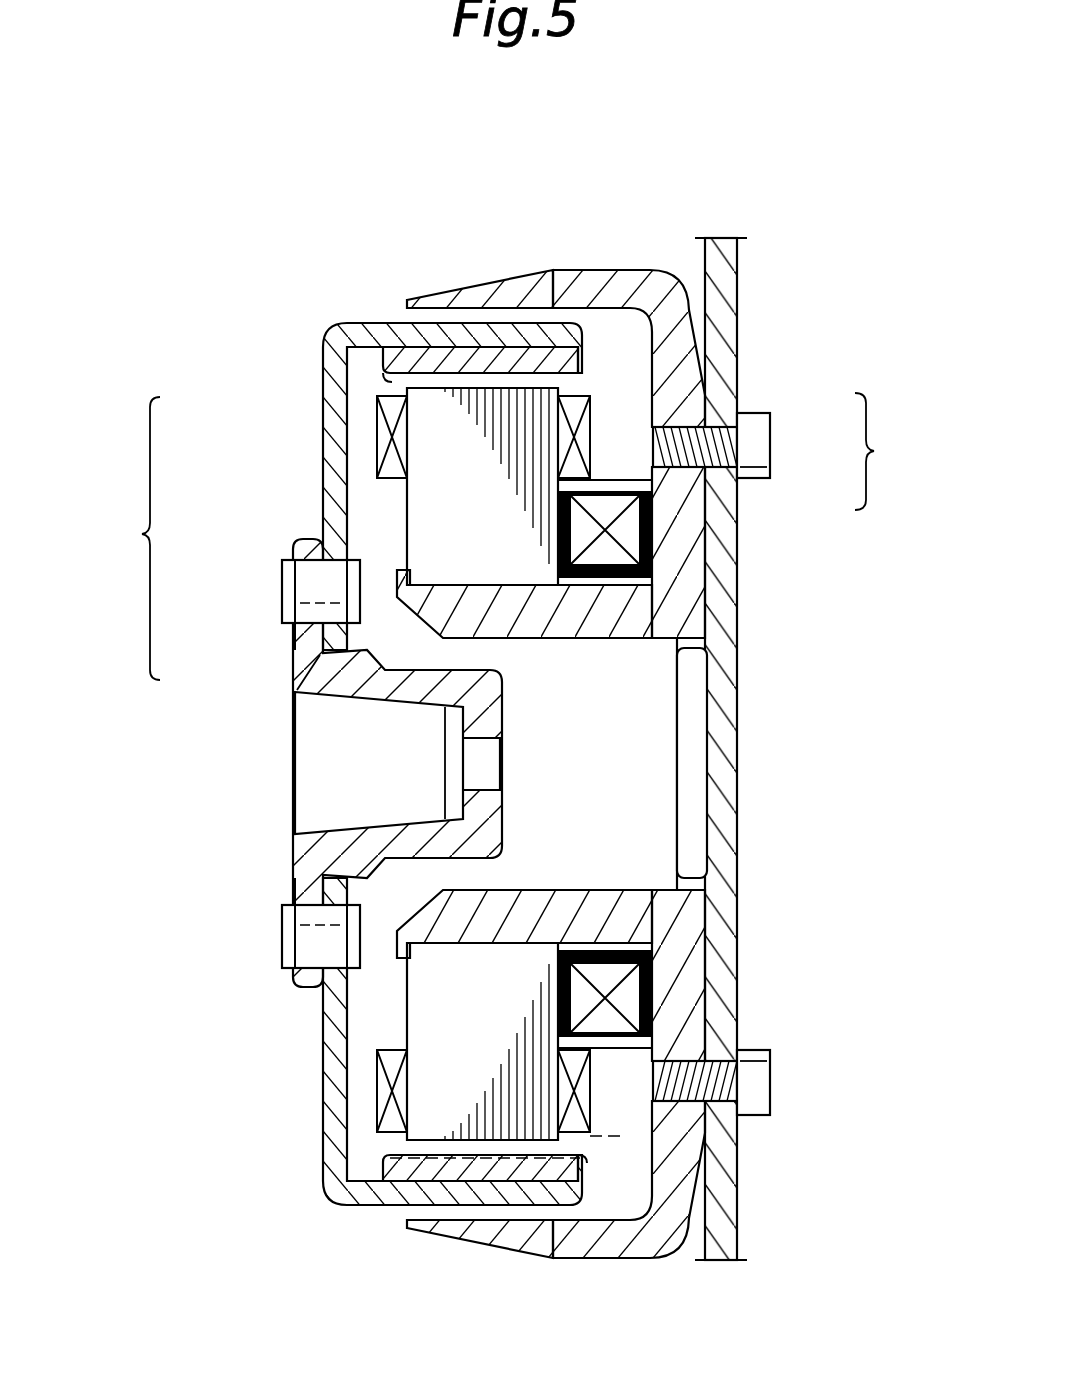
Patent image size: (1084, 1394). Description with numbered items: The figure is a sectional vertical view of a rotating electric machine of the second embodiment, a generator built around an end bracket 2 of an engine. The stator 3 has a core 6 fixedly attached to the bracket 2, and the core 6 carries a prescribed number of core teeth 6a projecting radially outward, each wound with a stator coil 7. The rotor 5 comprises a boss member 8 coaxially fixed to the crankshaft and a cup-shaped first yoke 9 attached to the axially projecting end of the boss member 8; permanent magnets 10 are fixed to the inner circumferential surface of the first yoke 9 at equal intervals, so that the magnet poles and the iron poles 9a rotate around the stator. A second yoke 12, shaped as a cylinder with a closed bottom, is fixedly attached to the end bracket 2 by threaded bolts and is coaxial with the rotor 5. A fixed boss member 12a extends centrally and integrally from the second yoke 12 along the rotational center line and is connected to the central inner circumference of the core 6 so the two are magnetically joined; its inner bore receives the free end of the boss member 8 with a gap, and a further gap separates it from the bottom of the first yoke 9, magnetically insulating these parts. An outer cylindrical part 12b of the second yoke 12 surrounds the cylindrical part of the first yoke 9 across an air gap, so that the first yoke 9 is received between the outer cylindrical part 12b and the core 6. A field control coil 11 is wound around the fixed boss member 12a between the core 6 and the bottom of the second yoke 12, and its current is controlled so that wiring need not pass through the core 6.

The end bracket 2 is at (725, 743).
The stator 3 is at (877, 451).
The rotor 5 is at (134, 538).
The core 6 is at (737, 488).
The core teeth 6a is at (423, 507).
The stator coil 7 is at (580, 420).
The boss member 8 is at (317, 680).
The first yoke 9 is at (330, 423).
The iron poles 9a is at (388, 376).
The permanent magnets 10 is at (405, 350).
The field control coil 11 is at (628, 537).
The second yoke 12 is at (630, 277).
The boss member 12a is at (590, 630).
The outer cylindrical part 12b is at (463, 290).